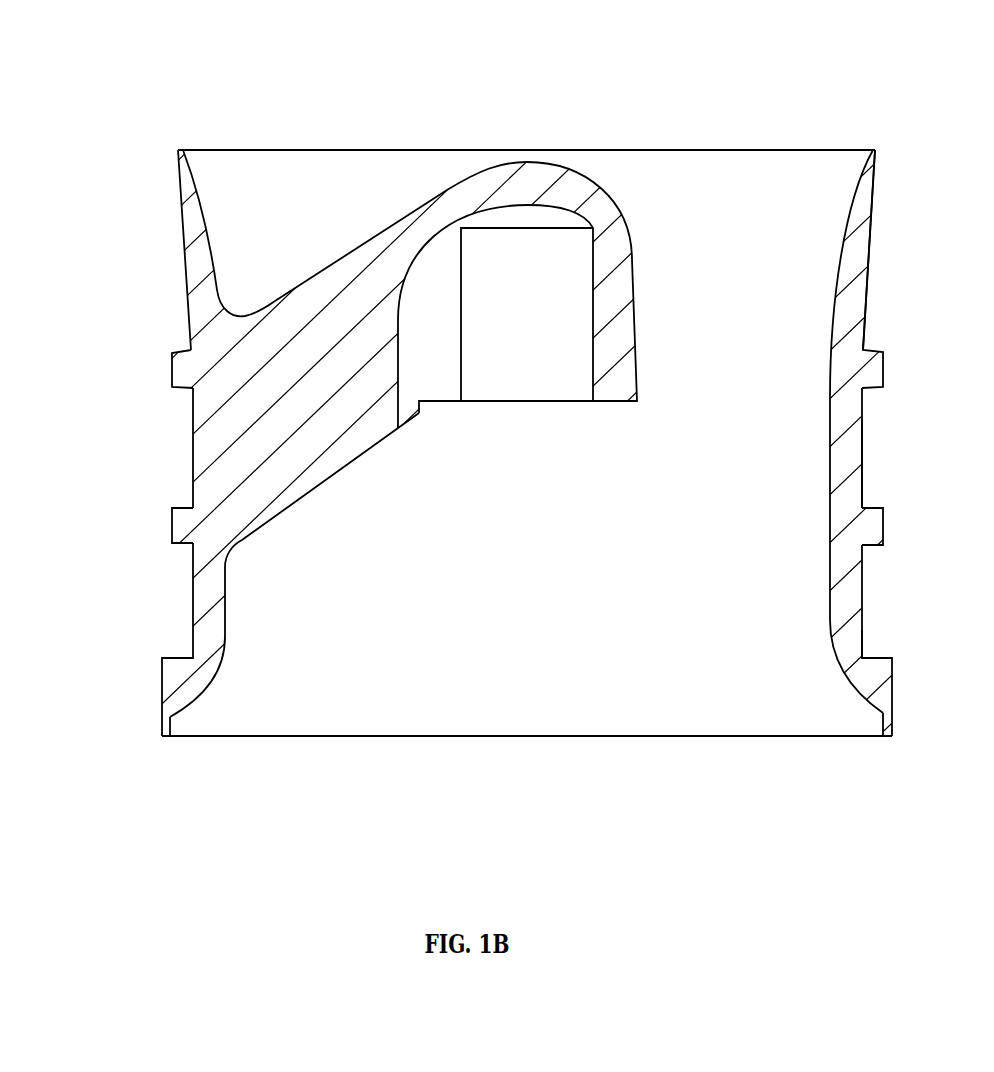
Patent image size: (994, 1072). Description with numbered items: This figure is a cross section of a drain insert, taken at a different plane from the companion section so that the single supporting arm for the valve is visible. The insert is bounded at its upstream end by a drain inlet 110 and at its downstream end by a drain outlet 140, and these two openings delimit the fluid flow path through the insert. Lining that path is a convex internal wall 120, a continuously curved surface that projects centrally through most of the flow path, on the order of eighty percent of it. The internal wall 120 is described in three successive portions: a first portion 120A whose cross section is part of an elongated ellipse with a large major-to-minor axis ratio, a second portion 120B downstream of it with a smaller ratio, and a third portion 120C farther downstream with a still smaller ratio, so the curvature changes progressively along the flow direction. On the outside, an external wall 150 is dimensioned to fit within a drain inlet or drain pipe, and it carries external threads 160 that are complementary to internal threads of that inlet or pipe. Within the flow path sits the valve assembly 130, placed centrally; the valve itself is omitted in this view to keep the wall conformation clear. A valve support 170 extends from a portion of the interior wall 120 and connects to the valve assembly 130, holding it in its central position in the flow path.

The drain inlet 110 is at (645, 152).
The convex internal wall 120 is at (850, 195).
The first portion of the internal wall 120A is at (795, 172).
The second portion of the internal wall 120B is at (808, 423).
The third portion of the internal wall 120C is at (825, 627).
The valve assembly 130 is at (600, 403).
The drain outlet 140 is at (360, 736).
The external wall 150 is at (192, 446).
The external threads 160 is at (172, 381).
The valve support 170 is at (325, 482).